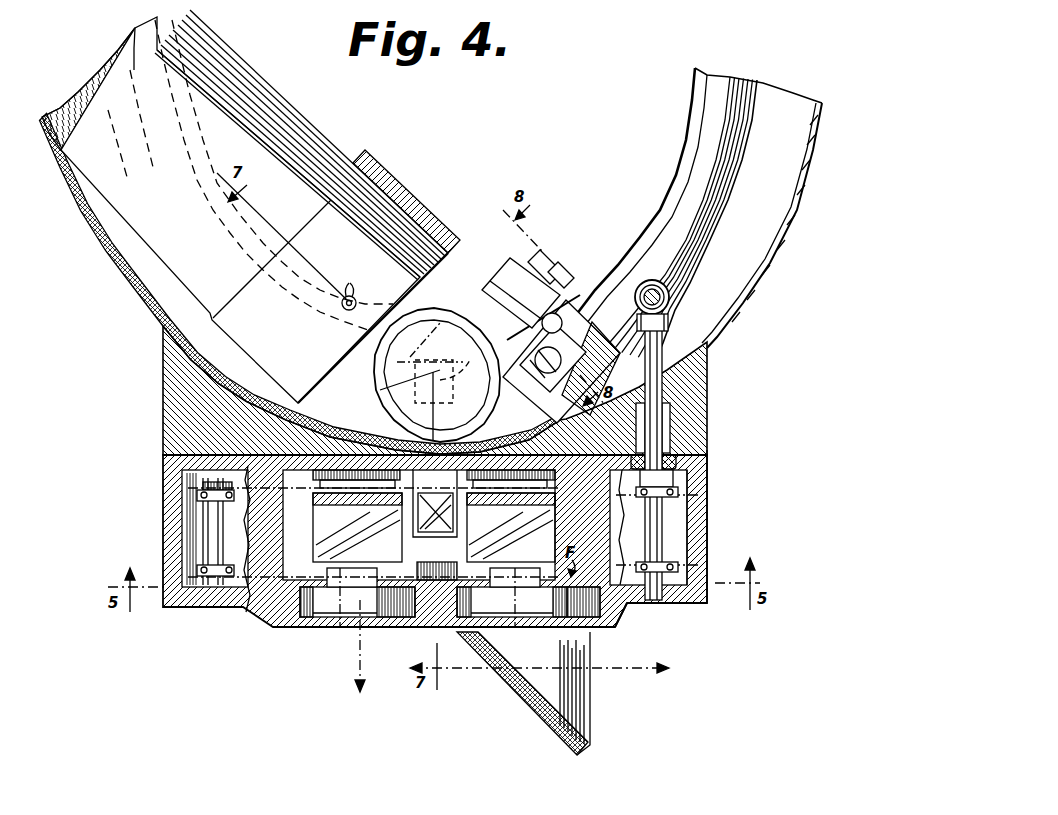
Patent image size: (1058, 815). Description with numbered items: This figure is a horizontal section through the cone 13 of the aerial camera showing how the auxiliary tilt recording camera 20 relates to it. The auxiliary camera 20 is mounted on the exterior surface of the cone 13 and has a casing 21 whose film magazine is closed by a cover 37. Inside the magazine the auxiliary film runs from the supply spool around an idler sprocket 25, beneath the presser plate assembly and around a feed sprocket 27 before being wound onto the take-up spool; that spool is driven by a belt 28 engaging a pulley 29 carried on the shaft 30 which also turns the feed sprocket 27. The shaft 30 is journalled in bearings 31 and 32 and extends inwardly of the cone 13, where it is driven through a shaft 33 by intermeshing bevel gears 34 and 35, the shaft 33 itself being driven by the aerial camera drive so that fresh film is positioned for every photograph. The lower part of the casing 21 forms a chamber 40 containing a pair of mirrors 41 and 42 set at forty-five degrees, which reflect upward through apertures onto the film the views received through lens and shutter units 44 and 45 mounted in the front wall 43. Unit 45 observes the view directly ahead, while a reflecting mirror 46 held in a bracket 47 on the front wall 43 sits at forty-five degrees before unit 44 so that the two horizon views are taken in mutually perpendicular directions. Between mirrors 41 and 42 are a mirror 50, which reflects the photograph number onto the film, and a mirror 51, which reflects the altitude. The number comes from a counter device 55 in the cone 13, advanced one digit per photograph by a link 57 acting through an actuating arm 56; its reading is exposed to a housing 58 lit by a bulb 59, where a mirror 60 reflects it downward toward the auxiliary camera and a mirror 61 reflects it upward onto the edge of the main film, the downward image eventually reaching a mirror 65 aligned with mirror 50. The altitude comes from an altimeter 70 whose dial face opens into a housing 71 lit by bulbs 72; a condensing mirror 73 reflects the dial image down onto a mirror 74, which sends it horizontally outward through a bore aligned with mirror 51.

The cone 13 is at (762, 264).
The auxiliary camera 20 is at (716, 478).
The casing 21 is at (712, 536).
The idler sprocket 25 is at (200, 498).
The feed sprocket 27 is at (675, 498).
The belt 28 is at (628, 498).
The pulley 29 is at (680, 492).
The shaft 30 is at (658, 352).
The bearing 31 is at (694, 461).
The bearing 32 is at (672, 386).
The shaft 33 is at (665, 290).
The bevel gear 34 is at (670, 300).
The bevel gear 35 is at (668, 318).
The cover 37 is at (672, 608).
The chamber 40 is at (423, 489).
The mirror 41 is at (547, 528).
The mirror 42 is at (320, 528).
The front wall 43 is at (580, 615).
The lens and shutter unit 44 is at (523, 612).
The lens and shutter unit 45 is at (305, 617).
The reflecting mirror 46 is at (582, 715).
The bracket 47 is at (545, 724).
The mirror 50 is at (432, 562).
The mirror 51 is at (440, 522).
The counter device 55 is at (478, 280).
The actuating arm 56 is at (552, 262).
The link 57 is at (568, 280).
The housing 58 is at (598, 356).
The bulb 59 is at (541, 328).
The mirror 60 is at (532, 394).
The mirror 61 is at (548, 410).
The mirror 65 is at (430, 363).
The altimeter 70 is at (302, 103).
The housing 71 is at (393, 198).
The bulb 72 is at (344, 309).
The condensing mirror 73 is at (378, 400).
The mirror 74 is at (457, 362).